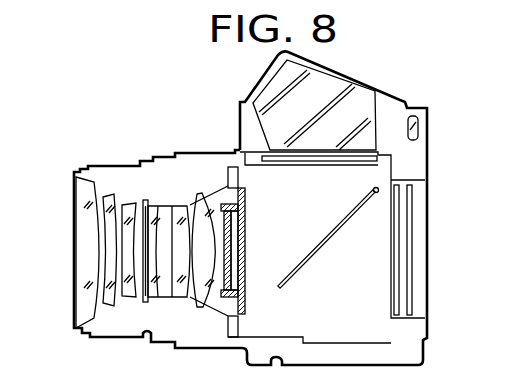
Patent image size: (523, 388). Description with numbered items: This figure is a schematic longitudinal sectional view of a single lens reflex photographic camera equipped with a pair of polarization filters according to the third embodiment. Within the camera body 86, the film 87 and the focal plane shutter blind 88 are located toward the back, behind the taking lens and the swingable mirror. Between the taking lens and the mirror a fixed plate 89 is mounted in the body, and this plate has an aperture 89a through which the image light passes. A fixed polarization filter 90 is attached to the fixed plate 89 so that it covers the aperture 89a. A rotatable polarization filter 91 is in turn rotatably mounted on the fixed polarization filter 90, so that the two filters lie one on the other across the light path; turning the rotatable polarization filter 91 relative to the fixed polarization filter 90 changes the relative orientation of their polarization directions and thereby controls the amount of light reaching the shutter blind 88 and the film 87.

The camera body 86 is at (153, 153).
The film 87 is at (412, 205).
The focal plane shutter blind 88 is at (397, 240).
The fixed plate 89 is at (244, 195).
The aperture 89a is at (244, 290).
The fixed polarization filter 90 is at (237, 229).
The rotatable polarization filter 91 is at (229, 268).